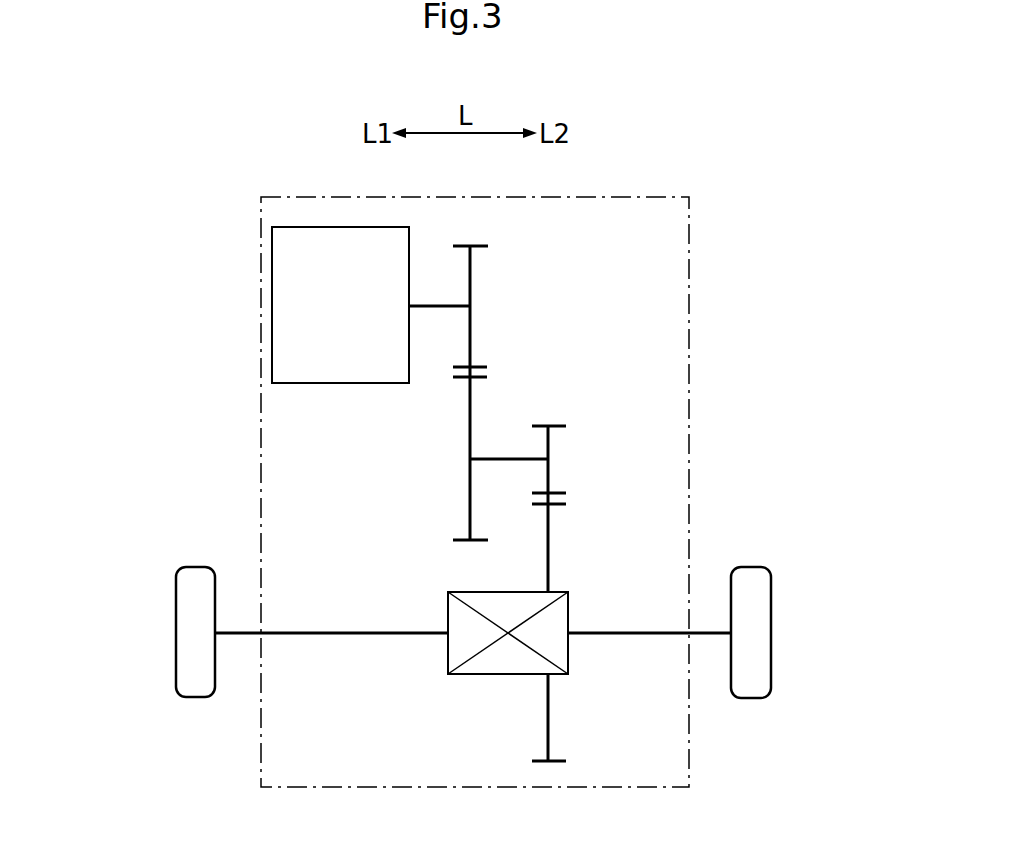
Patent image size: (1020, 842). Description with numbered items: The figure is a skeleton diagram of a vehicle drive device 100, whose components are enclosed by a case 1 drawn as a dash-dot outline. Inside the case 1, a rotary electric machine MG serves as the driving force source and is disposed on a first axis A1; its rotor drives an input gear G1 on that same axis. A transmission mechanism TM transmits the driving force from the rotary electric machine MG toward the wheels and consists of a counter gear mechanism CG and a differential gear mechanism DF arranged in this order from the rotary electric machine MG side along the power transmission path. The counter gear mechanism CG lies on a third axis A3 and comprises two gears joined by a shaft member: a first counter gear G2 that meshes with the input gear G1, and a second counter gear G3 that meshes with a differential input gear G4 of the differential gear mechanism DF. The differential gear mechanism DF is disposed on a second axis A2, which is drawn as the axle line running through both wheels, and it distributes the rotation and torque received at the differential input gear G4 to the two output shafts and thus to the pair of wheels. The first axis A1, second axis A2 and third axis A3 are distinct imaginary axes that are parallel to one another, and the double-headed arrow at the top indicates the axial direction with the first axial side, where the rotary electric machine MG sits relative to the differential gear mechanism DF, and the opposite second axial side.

The vehicle drive device 100 is at (166, 158).
The case 1 is at (261, 430).
The transmission mechanism TM is at (563, 270).
The rotary electric machine MG is at (335, 227).
The first axis A1 is at (471, 306).
The second axis A2 is at (215, 633).
The third axis A3 is at (470, 459).
The input gear G1 is at (476, 244).
The first counter gear G2 is at (483, 380).
The second counter gear G3 is at (557, 423).
The differential input gear G4 is at (555, 765).
The counter gear mechanism CG is at (651, 469).
The differential gear mechanism DF is at (570, 587).